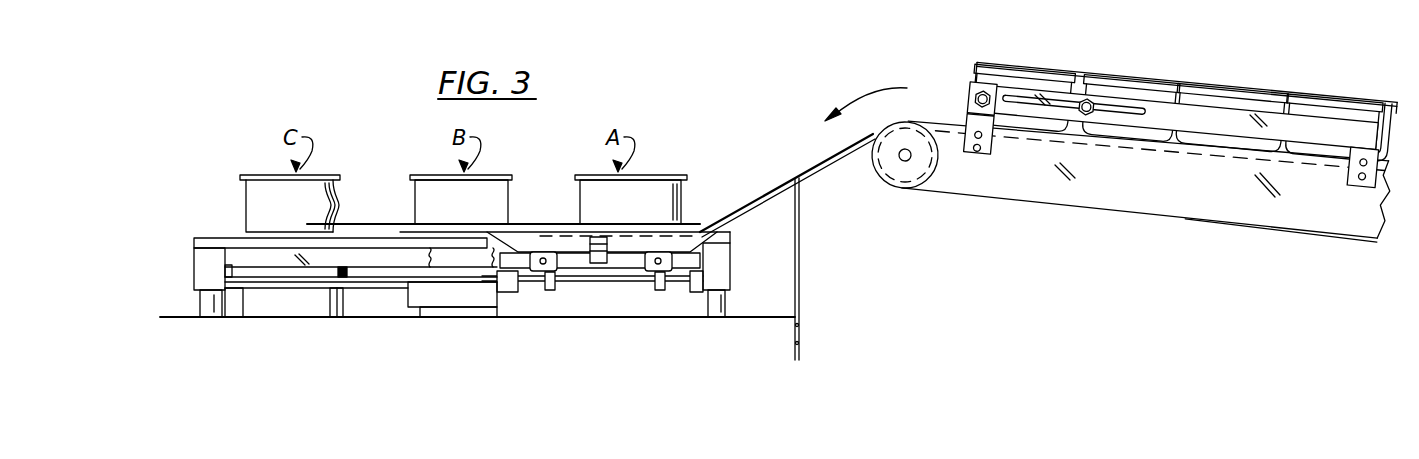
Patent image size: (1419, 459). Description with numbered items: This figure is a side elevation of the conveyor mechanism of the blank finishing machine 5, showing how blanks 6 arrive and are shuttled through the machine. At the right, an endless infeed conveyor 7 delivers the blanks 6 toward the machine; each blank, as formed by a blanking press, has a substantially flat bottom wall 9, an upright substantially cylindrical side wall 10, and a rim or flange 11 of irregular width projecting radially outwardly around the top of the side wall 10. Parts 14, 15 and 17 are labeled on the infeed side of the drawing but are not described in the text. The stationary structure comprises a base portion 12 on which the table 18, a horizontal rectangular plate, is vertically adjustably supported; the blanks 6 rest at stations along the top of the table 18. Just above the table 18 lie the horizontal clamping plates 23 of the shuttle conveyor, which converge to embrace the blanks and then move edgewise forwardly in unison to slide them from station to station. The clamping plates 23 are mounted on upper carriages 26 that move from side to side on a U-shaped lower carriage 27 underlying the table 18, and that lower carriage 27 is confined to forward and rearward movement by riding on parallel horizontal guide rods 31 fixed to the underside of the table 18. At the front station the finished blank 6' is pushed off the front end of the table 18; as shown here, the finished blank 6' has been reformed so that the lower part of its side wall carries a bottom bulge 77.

The blank finishing machine 5 is at (218, 168).
The finished blank 6' is at (262, 203).
The bottom bulge 77 is at (240, 221).
The blanks 6 is at (879, 119).
The rim or flange 11 is at (681, 152).
The side wall 10 is at (690, 205).
The clamping plates 23 is at (561, 200).
The bottom wall 9 is at (632, 255).
The upper carriages 26 is at (573, 252).
The U-shaped lower carriage 27 is at (539, 298).
The guide rods 31 is at (377, 283).
The table 18 is at (722, 236).
The chute 17 is at (809, 178).
The base portion 12 is at (751, 316).
The endless infeed conveyor 7 is at (889, 186).
The bolt 14 is at (968, 99).
The bolt 15 is at (1089, 119).